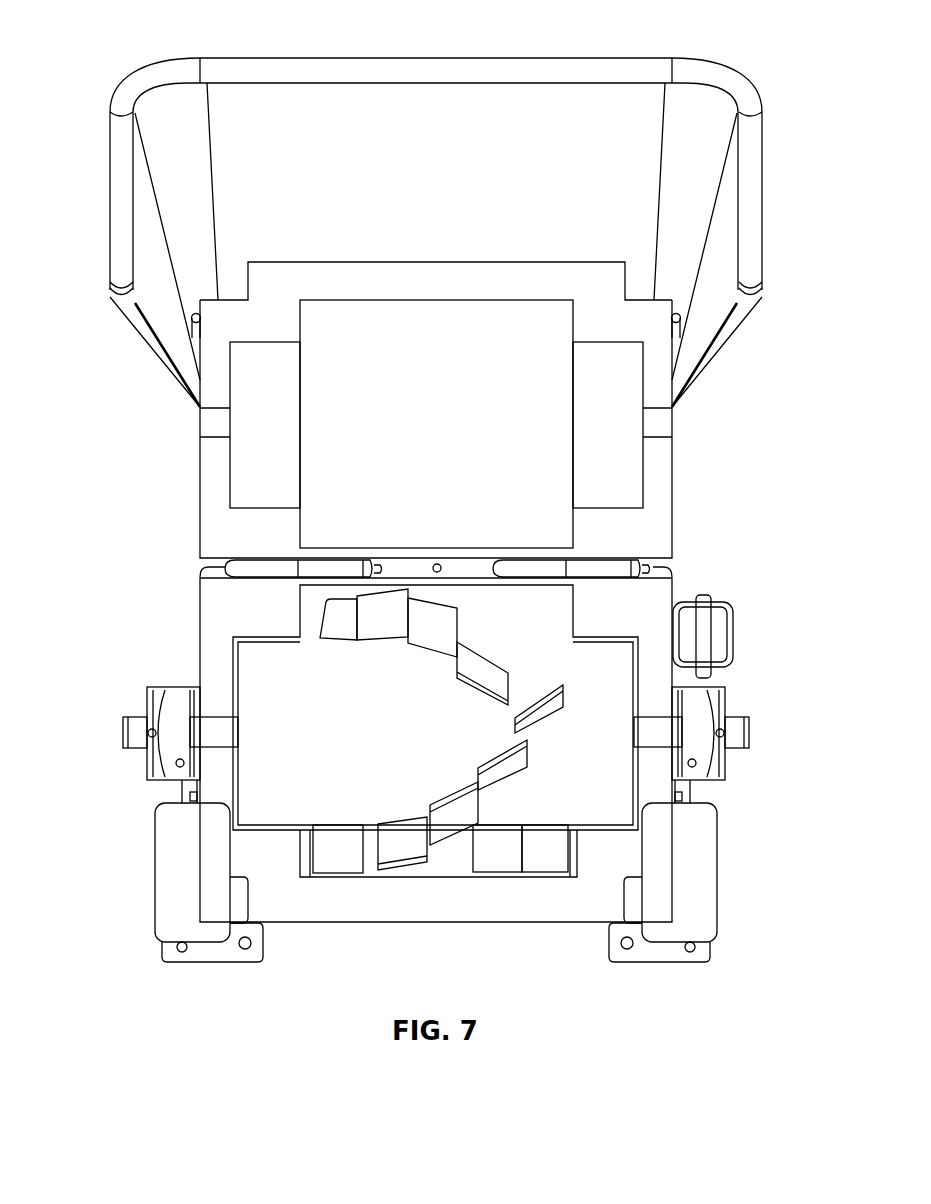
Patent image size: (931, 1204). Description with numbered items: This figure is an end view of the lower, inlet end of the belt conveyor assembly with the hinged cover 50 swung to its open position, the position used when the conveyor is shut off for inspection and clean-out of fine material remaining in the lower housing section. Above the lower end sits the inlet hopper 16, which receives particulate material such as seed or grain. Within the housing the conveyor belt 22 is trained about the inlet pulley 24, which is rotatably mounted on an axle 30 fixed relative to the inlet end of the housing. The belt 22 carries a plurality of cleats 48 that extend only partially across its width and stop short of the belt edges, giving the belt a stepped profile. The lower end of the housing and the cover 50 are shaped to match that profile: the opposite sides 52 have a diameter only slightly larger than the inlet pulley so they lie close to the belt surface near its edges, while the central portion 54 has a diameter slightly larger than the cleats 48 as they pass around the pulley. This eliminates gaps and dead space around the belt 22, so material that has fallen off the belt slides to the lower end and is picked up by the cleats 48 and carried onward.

The inlet hopper 16 is at (120, 255).
The conveyor belt 22 is at (272, 682).
The pulley 24 is at (276, 727).
The axle 30 is at (750, 733).
The cleats 48 is at (338, 633).
The hinged cover 50 is at (213, 502).
The sides 52 is at (225, 327).
The central portion 54 is at (467, 272).